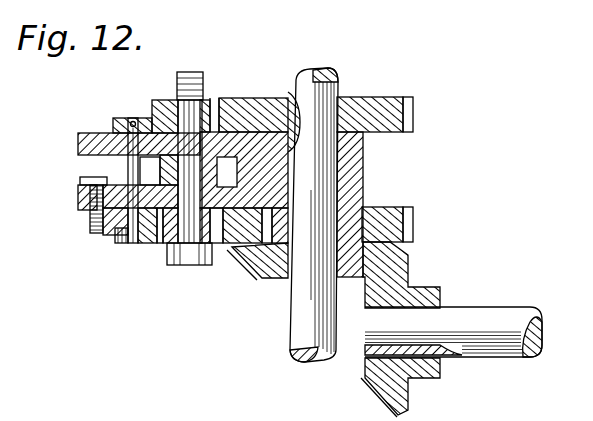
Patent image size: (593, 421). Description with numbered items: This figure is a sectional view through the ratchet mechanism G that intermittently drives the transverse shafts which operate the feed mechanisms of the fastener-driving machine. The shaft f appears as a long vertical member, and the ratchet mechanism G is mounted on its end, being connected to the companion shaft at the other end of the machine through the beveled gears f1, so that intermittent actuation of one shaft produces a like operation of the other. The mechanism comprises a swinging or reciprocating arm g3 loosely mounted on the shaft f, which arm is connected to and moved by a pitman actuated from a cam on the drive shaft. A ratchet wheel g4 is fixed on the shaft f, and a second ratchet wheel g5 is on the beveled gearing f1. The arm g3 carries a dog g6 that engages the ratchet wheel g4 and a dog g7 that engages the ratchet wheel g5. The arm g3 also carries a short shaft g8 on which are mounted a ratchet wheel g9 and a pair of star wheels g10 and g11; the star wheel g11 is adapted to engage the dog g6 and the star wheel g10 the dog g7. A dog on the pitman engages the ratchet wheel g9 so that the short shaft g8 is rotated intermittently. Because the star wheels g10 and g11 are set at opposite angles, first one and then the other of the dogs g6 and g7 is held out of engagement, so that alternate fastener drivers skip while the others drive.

The transverse shaft f is at (333, 193).
The beveled gears f1 is at (277, 278).
The ratchet mechanism G is at (262, 150).
The swinging or reciprocating arm g3 is at (297, 80).
The ratchet wheel g4 is at (390, 118).
The ratchet wheel g5 is at (392, 231).
The dog g6 is at (168, 113).
The dog g7 is at (167, 240).
The short shaft g8 is at (128, 165).
The ratchet wheel g9 is at (110, 228).
The star wheel g10 is at (117, 238).
The star wheel g11 is at (113, 125).